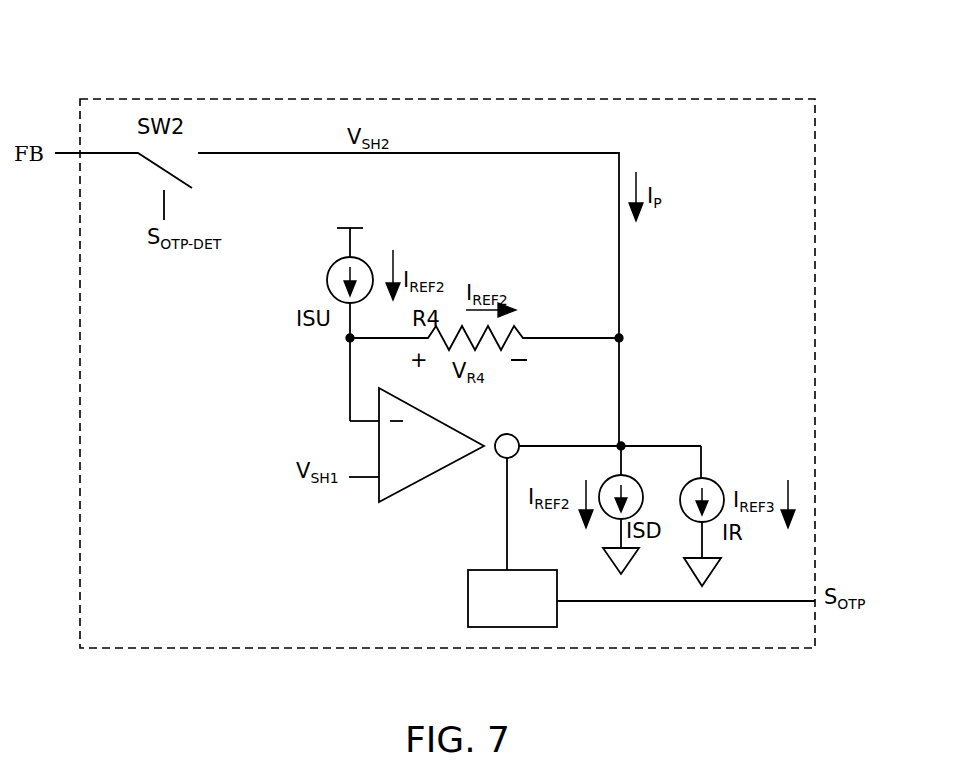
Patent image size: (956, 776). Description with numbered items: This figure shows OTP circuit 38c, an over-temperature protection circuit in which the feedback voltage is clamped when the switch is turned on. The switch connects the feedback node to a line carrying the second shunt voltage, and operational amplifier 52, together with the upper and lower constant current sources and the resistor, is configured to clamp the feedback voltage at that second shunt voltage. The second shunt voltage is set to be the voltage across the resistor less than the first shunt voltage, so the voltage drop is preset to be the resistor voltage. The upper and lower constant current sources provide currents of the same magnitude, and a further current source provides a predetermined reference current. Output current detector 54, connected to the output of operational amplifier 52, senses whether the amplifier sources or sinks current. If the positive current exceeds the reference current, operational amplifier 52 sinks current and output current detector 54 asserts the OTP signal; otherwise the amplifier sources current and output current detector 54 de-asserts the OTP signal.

The OTP circuit 38c is at (171, 99).
The operational amplifier 52 is at (420, 482).
The output current detector 54 is at (523, 610).